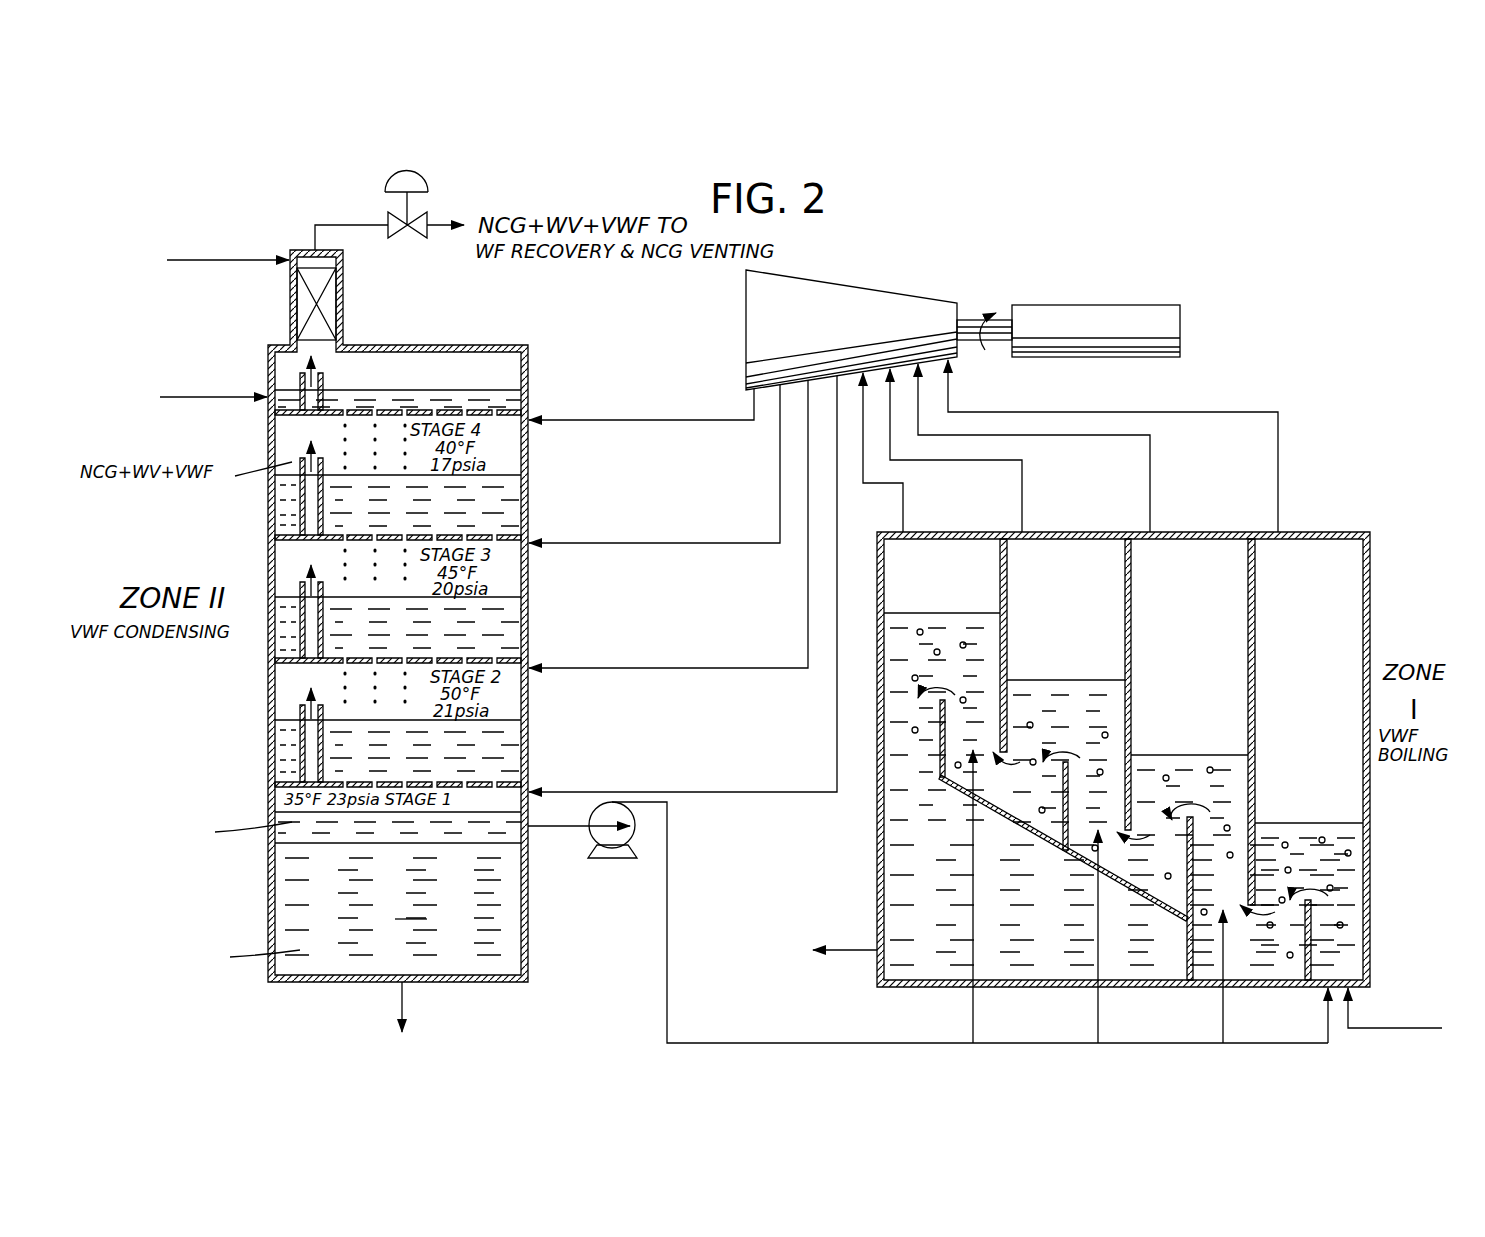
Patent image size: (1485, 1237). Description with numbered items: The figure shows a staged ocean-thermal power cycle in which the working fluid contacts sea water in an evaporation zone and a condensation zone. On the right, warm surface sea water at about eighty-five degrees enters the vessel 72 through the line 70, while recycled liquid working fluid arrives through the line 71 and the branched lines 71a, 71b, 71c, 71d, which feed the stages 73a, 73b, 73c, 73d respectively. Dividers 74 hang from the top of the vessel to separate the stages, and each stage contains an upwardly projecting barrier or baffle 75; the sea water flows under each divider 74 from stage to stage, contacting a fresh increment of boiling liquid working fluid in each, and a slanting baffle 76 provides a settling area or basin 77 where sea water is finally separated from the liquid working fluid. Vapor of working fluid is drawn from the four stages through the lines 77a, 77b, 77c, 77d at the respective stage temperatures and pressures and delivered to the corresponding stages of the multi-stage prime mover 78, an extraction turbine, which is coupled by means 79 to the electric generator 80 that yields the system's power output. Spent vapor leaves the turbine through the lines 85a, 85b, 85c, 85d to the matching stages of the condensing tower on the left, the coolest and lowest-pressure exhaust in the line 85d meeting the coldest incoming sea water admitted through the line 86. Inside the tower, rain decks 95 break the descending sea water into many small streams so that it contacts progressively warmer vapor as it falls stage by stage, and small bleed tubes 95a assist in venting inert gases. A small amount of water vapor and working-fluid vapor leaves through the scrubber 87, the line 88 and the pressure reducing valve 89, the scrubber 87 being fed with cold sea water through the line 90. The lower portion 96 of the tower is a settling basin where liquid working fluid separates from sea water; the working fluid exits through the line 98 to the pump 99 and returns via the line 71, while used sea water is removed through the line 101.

The line 70 is at (1348, 1030).
The line 71 is at (668, 924).
The branched line 71a is at (1328, 1020).
The branched line 71b is at (1224, 1025).
The branched line 71c is at (1099, 1031).
The branched line 71d is at (975, 1031).
The vessel 72 is at (1370, 816).
The stage 73a is at (1301, 752).
The stage 73b is at (1195, 737).
The stage 73c is at (1059, 698).
The stage 73d is at (942, 683).
The divider 74 is at (1008, 648).
The barrier or baffle 75 is at (946, 735).
The baffle 76 is at (1068, 857).
The settling area or basin 77 is at (877, 868).
The line 77a is at (1280, 458).
The line 77b is at (1152, 490).
The line 77c is at (1023, 500).
The line 77d is at (905, 500).
The multi-stage prime mover 78 is at (868, 289).
The connecting means 79 is at (967, 318).
The electric generator 80 is at (1090, 305).
The line 85a is at (727, 792).
The line 85b is at (637, 668).
The line 85c is at (632, 543).
The line 85d is at (622, 421).
The line 86 is at (222, 397).
The scrubber 87 is at (343, 297).
The line 88 is at (343, 220).
The pressure reducing valve 89 is at (422, 214).
The line 90 is at (243, 259).
The rain deck 95 is at (506, 411).
The bleed tube 95a is at (327, 390).
The lower portion 96 is at (320, 893).
The line 98 is at (574, 830).
The pump 99 is at (615, 860).
The line 101 is at (402, 993).